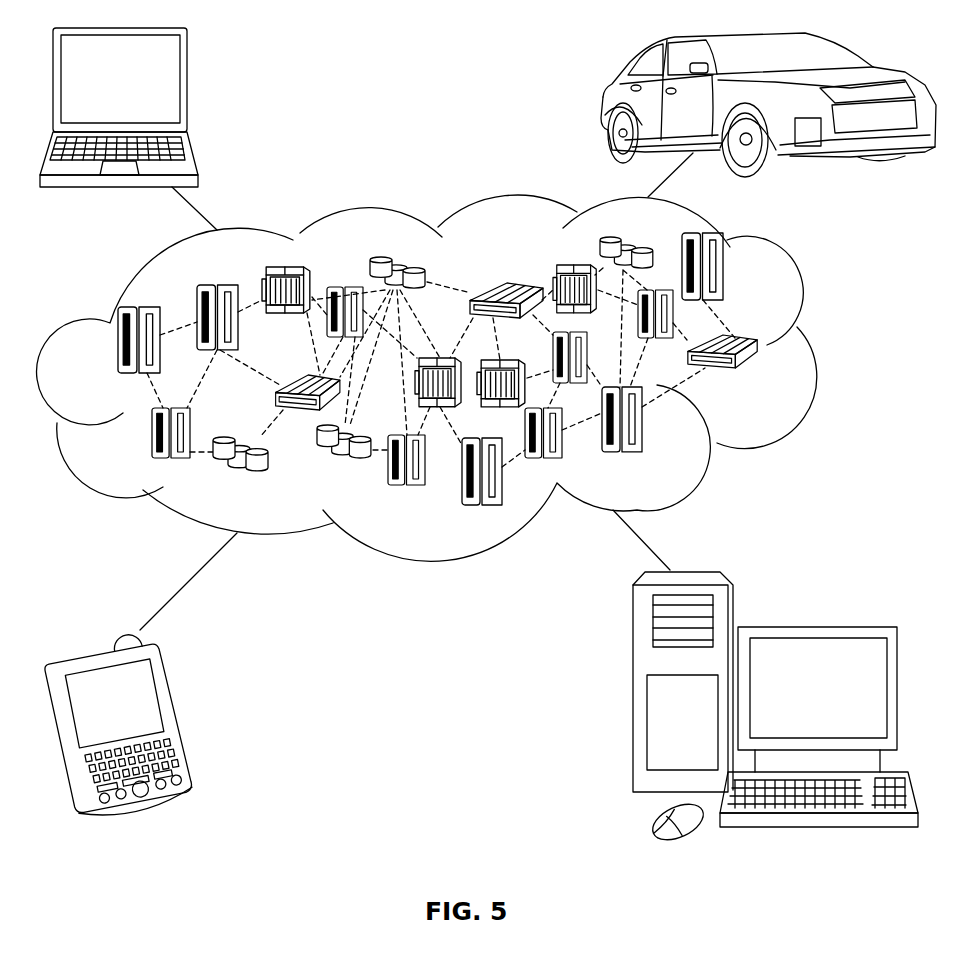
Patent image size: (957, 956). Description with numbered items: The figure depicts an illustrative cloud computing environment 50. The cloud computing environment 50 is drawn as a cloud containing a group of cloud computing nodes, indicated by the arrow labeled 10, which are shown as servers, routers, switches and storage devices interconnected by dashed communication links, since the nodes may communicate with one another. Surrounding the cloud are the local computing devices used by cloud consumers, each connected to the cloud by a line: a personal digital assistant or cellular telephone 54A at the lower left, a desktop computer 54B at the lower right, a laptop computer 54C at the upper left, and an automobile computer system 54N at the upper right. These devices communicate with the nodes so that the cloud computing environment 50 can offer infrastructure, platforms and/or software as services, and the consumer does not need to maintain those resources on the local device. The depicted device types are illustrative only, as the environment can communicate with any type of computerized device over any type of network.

The cloud computing environment 50 is at (817, 348).
The cloud computing nodes 10 is at (760, 377).
The personal digital assistant (PDA) or cellular telephone 54A is at (176, 714).
The desktop computer 54B is at (815, 625).
The laptop computer 54C is at (188, 90).
The automobile computer system 54N is at (605, 103).